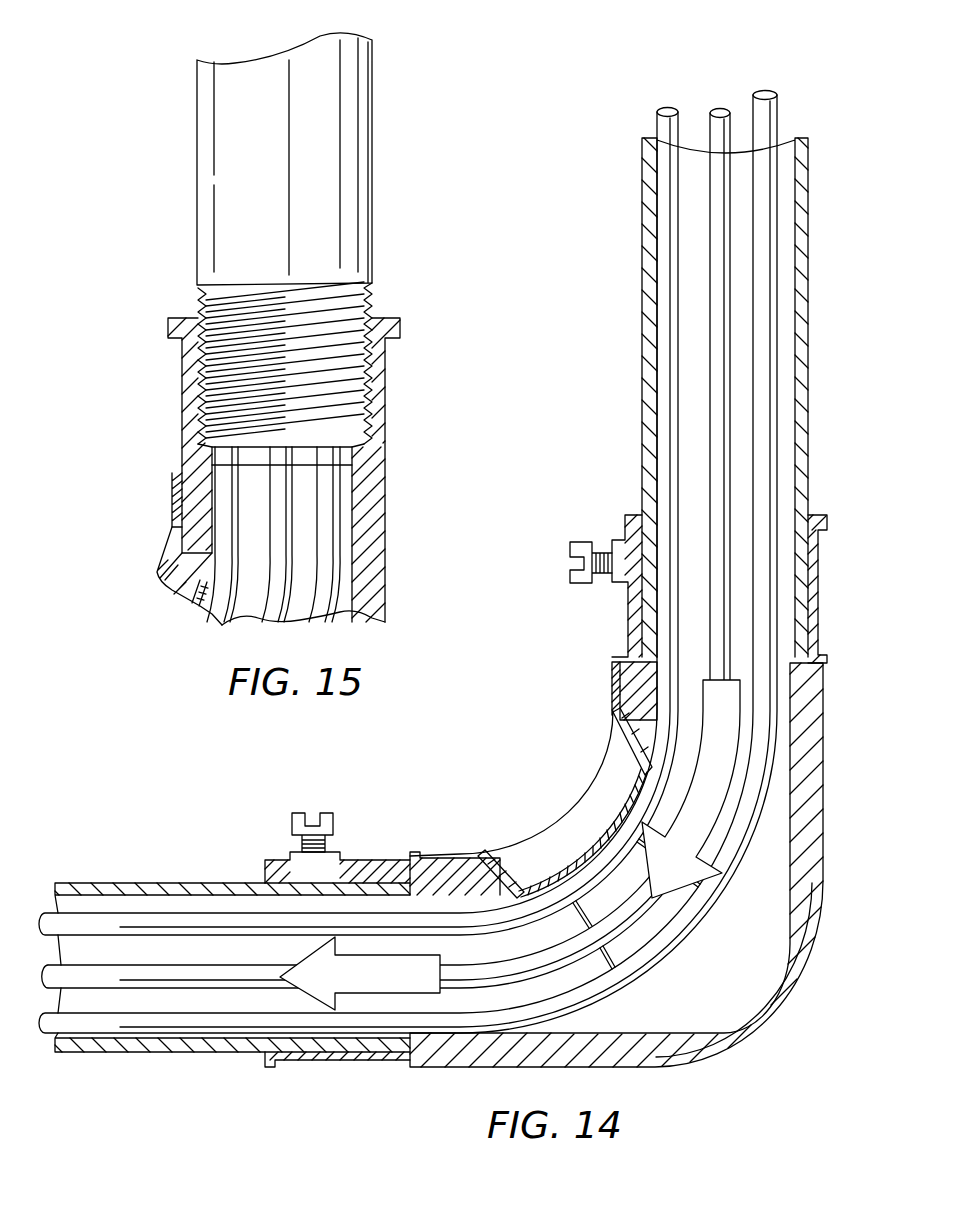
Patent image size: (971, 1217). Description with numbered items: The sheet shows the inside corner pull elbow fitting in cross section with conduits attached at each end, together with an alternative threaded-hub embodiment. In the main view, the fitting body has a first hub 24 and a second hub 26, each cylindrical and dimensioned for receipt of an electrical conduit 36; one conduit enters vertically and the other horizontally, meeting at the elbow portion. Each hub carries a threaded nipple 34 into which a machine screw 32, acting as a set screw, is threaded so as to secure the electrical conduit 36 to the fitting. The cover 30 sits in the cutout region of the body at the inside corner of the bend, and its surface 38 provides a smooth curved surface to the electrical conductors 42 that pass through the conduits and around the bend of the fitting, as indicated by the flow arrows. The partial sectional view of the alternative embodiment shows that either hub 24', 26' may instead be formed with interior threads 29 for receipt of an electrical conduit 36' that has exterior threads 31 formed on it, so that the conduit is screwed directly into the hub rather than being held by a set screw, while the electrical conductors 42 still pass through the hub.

In FIG. 14, the first hub 24 is at (841, 589).
In FIG. 14, the second hub 26 is at (337, 1088).
In FIG. 15, the interior threads 29 is at (198, 384).
In FIG. 14, the cover 30 is at (608, 712).
In FIG. 15, the exterior threads 31 is at (374, 304).
In FIG. 14, the machine screw 32 is at (570, 549).
In FIG. 14, the threaded nipple 34 is at (624, 540).
In FIG. 14, the electrical conduit 36 is at (456, 595).
In FIG. 15, the electrical conduit 36' is at (317, 159).
In FIG. 14, the surface 38 is at (604, 835).
In FIG. 14, the electrical conductors 42 is at (770, 121).
In FIG. 15, the first hub 24' is at (313, 471).
In FIG. 15, the second hub 26' is at (362, 471).